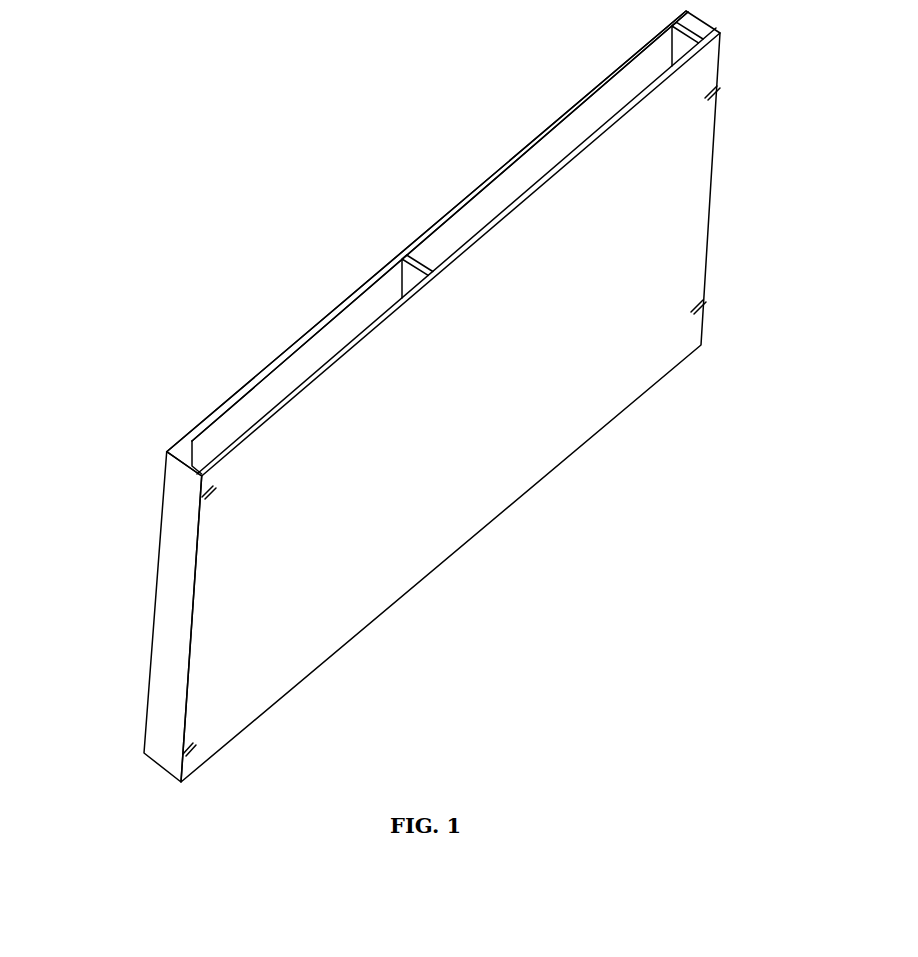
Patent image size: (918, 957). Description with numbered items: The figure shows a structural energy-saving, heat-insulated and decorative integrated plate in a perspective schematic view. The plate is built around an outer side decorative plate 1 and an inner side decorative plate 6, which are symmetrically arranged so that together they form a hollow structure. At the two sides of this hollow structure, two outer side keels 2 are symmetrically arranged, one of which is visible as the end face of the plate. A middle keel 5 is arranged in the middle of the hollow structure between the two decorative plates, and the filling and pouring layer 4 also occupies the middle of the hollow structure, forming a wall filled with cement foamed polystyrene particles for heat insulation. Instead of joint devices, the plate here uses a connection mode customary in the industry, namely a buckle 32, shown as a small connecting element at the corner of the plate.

The outer side decorative plate 1 is at (663, 210).
The outer side keel 2 is at (172, 627).
The filling and pouring layer 4 is at (285, 375).
The middle keel 5 is at (405, 252).
The inner side decorative plate 6 is at (542, 138).
The buckle 32 is at (202, 495).